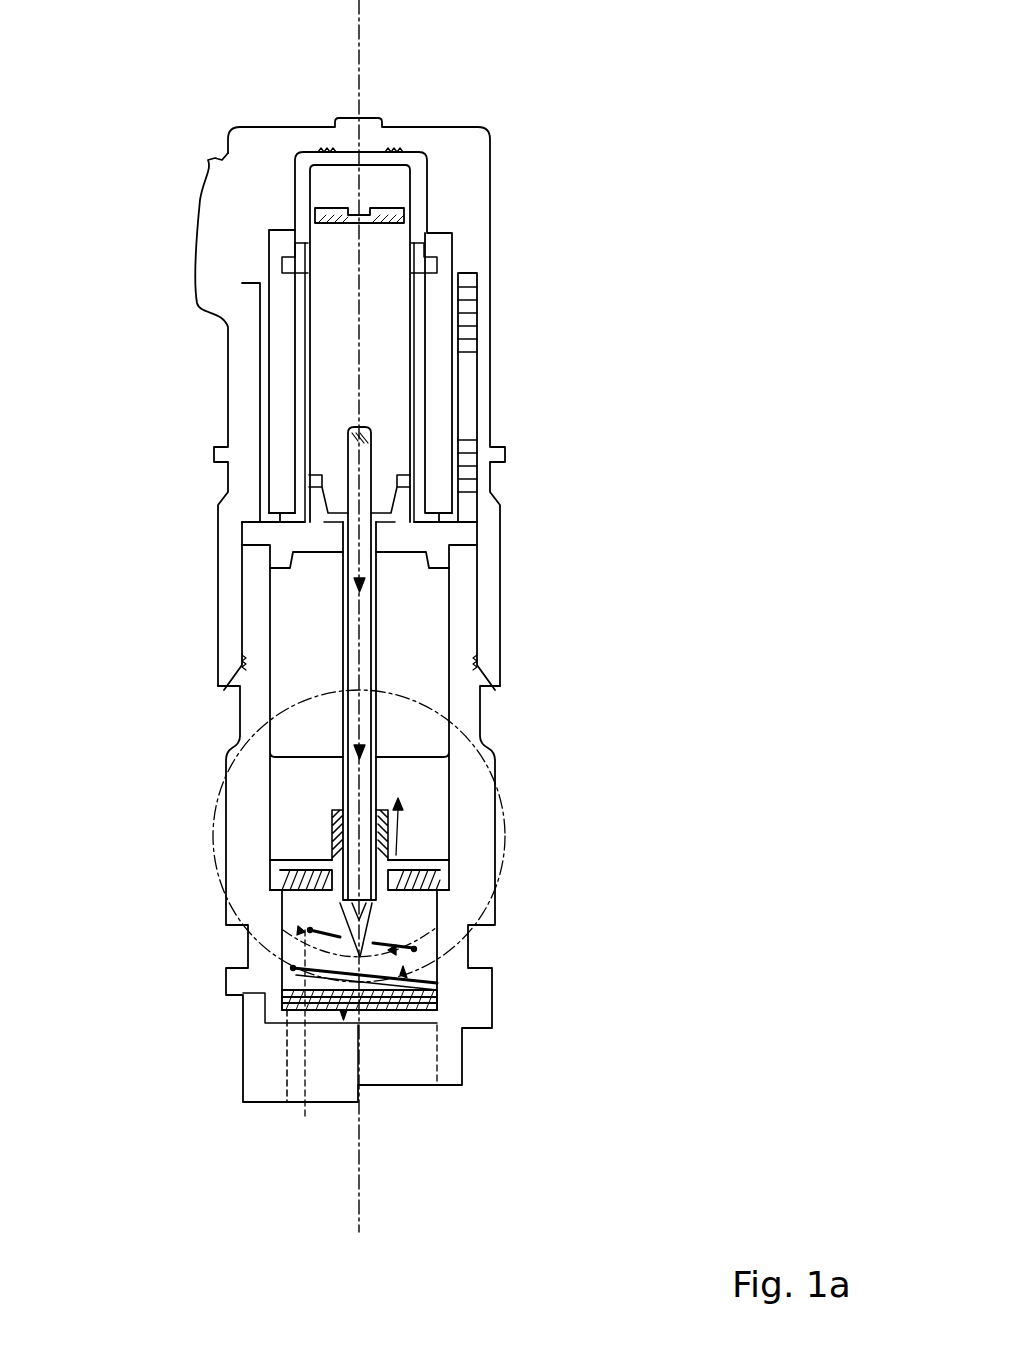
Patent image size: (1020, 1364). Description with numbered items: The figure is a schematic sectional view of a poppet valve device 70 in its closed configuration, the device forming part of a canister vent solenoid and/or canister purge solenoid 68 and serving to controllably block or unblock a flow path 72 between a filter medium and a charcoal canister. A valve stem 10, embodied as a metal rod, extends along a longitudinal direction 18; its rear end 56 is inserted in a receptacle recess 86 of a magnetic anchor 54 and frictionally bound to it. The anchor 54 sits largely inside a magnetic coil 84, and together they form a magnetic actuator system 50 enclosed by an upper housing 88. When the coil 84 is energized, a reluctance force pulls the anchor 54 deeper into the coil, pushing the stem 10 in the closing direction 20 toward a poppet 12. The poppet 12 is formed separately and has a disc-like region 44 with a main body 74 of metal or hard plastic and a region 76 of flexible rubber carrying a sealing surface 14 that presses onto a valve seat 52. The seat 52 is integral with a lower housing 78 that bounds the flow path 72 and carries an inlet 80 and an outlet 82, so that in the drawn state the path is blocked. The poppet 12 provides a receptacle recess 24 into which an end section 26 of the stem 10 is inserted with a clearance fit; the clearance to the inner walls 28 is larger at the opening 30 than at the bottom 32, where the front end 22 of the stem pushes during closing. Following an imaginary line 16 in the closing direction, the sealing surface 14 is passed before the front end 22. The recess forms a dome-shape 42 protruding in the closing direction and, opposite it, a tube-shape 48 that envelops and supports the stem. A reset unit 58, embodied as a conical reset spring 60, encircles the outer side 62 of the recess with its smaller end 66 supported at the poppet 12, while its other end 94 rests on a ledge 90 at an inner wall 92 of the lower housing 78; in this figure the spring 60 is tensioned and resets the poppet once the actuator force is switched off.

The valve stem 10 is at (363, 610).
The poppet 12 is at (448, 875).
The sealing surface 14 is at (390, 905).
The imaginary line 16 is at (358, 1212).
The longitudinal direction 18 is at (358, 20).
The closing direction 20 is at (393, 548).
The front end 22 is at (383, 1010).
The receptacle recess 24 is at (338, 860).
The end section 26 is at (330, 892).
The inner walls 28 is at (320, 840).
The opening 30 is at (356, 745).
The bottom 32 is at (373, 1010).
The dome-shape 42 is at (455, 962).
The disc-like region 44 is at (447, 840).
The tube-shape 48 is at (322, 830).
The magnetic actuator system 50 is at (455, 300).
The valve seat 52 is at (300, 920).
The magnetic anchor 54 is at (343, 234).
The rear end 56 is at (478, 487).
The reset unit 58 is at (413, 1010).
The reset spring 60 is at (398, 950).
The outer side 62 is at (300, 975).
The end 66 is at (410, 905).
The canister vent solenoid and/or canister purge solenoid 68 is at (574, 98).
The poppet valve device 70 is at (600, 155).
The flow path 72 is at (302, 1051).
The main body 74 is at (410, 825).
The region 76 is at (300, 928).
The lower housing 78 is at (300, 938).
The inlet 80 is at (343, 1022).
The outlet 82 is at (440, 870).
The magnetic coil 84 is at (437, 383).
The receptacle recess 86 is at (343, 432).
The upper housing 88 is at (240, 632).
The ledge 90 is at (403, 1010).
The inner wall 92 is at (430, 955).
The end 94 is at (345, 1012).